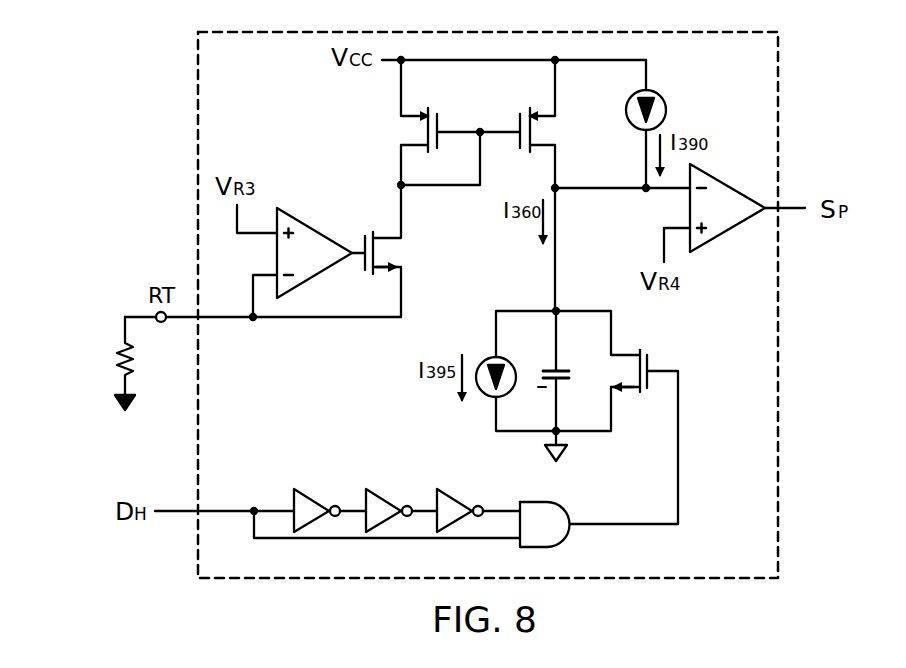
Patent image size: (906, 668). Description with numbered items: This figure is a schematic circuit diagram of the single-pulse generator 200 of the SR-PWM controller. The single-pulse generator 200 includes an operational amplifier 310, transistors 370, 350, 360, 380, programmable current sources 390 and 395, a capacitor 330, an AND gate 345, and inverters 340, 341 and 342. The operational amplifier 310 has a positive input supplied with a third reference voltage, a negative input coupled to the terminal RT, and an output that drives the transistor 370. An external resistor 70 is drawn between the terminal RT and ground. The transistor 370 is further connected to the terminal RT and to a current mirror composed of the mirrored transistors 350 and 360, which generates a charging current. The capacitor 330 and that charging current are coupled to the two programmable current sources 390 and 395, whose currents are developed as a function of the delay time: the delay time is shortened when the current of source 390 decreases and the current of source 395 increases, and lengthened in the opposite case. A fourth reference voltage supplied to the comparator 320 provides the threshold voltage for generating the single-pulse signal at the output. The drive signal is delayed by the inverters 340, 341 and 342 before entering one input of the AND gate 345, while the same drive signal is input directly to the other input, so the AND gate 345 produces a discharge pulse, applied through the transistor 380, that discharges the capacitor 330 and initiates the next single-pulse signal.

The single-pulse generator 200 is at (780, 78).
The operational amplifier 310 is at (312, 222).
The comparator 320 is at (742, 185).
The capacitor 330 is at (566, 368).
The inverter 340 is at (318, 490).
The inverter 341 is at (388, 490).
The inverter 342 is at (458, 490).
The AND gate 345 is at (563, 502).
The transistor 350 is at (398, 131).
The transistor 360 is at (556, 130).
The transistor 370 is at (400, 254).
The transistor 380 is at (652, 353).
The programmable current source 390 is at (667, 90).
The programmable current source 395 is at (478, 360).
The resistor 70 is at (110, 359).